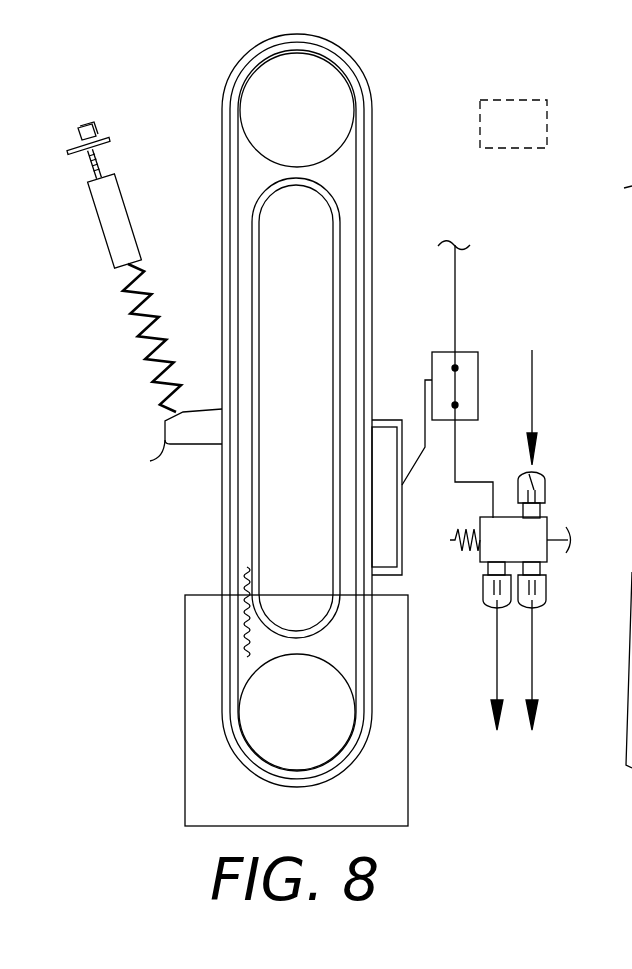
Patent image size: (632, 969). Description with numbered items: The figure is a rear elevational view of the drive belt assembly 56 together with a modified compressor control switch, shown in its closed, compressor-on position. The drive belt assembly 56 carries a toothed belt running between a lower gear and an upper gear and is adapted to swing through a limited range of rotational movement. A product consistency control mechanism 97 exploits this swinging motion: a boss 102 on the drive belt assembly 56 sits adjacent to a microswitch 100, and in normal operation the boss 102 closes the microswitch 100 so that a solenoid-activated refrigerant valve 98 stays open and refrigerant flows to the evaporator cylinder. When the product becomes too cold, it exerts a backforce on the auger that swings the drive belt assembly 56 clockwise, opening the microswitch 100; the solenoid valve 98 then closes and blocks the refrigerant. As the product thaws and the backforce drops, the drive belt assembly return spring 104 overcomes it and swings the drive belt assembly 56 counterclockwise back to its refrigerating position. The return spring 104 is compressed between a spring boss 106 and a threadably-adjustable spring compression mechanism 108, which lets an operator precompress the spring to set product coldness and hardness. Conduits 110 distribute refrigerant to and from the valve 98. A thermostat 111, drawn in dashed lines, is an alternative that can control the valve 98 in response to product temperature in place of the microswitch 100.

The drive belt assembly 56 is at (133, 793).
The product consistency control mechanism 97 is at (509, 268).
The solenoid-activated refrigerant valve 98 is at (548, 519).
The microswitch 100 is at (432, 352).
The boss 102 is at (403, 576).
The drive belt assembly return spring 104 is at (150, 365).
The spring boss 106 is at (158, 458).
The threadably-adjustable spring compression mechanism 108 is at (112, 133).
The conduits 110 is at (535, 470).
The thermostat 111 is at (512, 94).